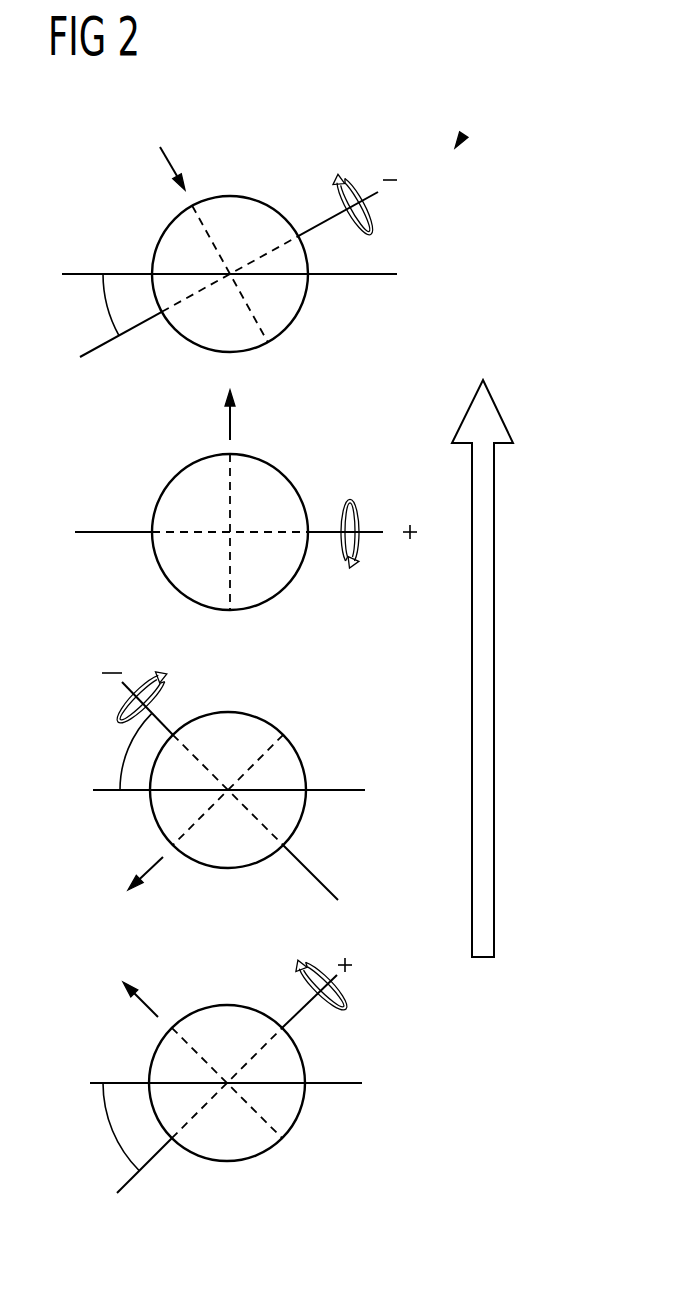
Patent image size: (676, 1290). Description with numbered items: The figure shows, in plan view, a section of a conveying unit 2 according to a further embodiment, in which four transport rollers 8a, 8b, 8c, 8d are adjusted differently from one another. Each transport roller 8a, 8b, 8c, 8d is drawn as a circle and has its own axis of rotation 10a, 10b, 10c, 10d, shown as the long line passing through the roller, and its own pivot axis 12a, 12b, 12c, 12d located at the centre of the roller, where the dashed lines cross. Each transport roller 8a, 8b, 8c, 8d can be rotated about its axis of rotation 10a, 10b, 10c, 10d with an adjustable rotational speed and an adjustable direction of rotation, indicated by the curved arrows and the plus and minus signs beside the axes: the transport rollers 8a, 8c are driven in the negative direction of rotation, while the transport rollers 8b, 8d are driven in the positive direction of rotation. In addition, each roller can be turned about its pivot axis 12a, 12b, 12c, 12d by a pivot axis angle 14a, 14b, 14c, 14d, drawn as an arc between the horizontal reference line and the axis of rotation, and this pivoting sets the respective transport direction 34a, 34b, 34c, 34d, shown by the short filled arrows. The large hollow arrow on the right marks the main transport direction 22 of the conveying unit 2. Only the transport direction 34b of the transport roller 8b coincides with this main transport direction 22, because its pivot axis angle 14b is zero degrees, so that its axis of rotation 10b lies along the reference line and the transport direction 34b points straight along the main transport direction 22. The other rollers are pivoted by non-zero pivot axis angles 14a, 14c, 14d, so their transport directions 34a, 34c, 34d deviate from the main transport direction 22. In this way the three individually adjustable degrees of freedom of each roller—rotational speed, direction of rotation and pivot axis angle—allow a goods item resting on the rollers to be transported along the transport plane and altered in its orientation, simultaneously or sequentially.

The conveying unit 2 is at (464, 135).
The main transport direction 22 is at (494, 698).
The transport roller 8a is at (298, 317).
The transport roller 8b is at (288, 477).
The transport roller 8c is at (273, 723).
The transport roller 8d is at (298, 1117).
The axis of rotation 10a is at (100, 346).
The axis of rotation 10b is at (105, 537).
The axis of rotation 10c is at (323, 873).
The axis of rotation 10d is at (138, 1173).
The pivot axis 12a is at (232, 270).
The pivot axis 12b is at (233, 533).
The pivot axis 12c is at (228, 788).
The pivot axis 12d is at (227, 1075).
The pivot axis angle 14a is at (120, 285).
The pivot axis angle 14b is at (88, 527).
The pivot axis angle 14c is at (133, 783).
The pivot axis angle 14d is at (122, 1093).
The transport direction 34a is at (167, 160).
The transport direction 34b is at (228, 424).
The transport direction 34c is at (150, 870).
The transport direction 34d is at (150, 1003).